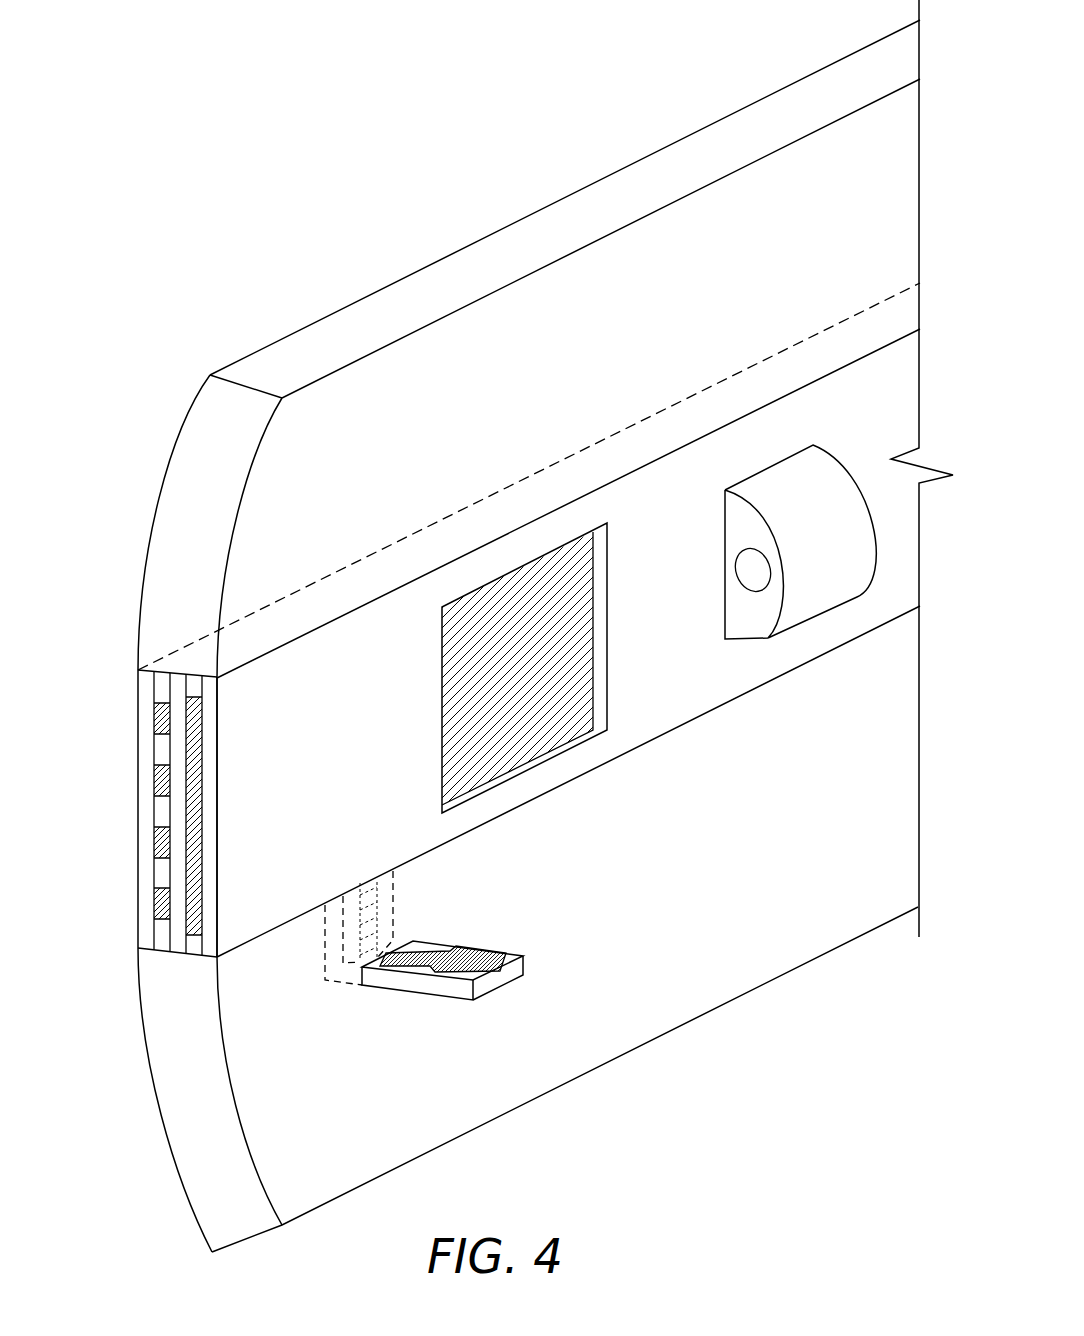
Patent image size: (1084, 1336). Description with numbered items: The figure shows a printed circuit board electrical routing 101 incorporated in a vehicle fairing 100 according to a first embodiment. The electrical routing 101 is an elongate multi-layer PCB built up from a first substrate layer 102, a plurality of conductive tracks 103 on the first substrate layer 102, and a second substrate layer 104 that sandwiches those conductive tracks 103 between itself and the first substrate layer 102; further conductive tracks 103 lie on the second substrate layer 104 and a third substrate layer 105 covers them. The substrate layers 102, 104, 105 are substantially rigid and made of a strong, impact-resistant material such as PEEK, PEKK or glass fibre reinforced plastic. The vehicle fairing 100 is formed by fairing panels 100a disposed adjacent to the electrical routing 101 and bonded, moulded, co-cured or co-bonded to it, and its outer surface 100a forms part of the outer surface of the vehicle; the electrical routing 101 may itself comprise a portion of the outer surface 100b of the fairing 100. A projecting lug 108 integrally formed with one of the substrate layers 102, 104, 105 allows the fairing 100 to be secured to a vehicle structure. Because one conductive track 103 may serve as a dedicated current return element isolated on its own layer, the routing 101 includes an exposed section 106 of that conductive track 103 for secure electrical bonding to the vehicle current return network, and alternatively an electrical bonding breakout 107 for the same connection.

The vehicle fairing 100 is at (590, 178).
The fairing panel / outer surface 100a is at (357, 327).
The outer surface 100b is at (187, 425).
The electrical routing 101 is at (120, 930).
The first substrate layer 102 is at (143, 878).
The conductive tracks 103 is at (155, 723).
The second substrate layer 104 is at (177, 685).
The third substrate layer 105 is at (210, 722).
The exposed section 106 is at (563, 733).
The electrical bonding breakout 107 is at (477, 952).
The projecting lug 108 is at (821, 601).